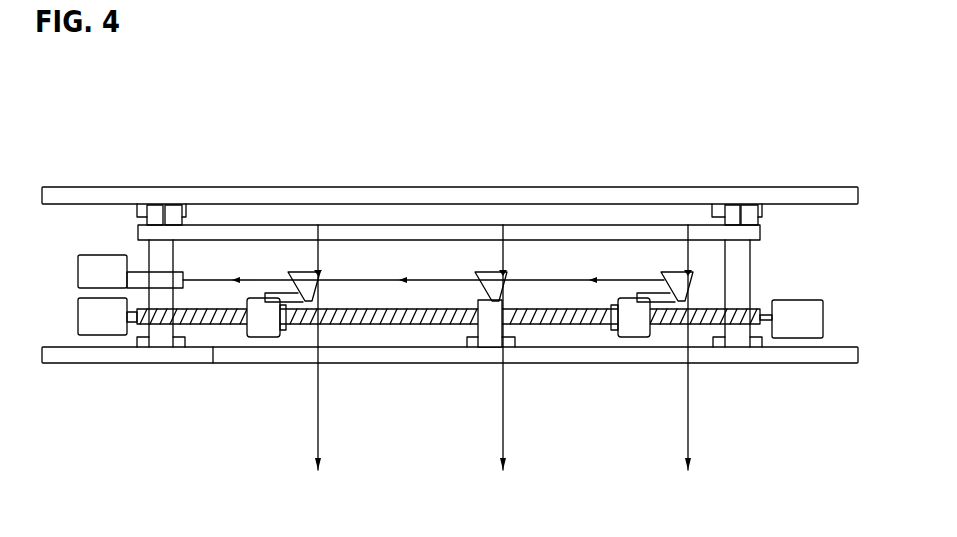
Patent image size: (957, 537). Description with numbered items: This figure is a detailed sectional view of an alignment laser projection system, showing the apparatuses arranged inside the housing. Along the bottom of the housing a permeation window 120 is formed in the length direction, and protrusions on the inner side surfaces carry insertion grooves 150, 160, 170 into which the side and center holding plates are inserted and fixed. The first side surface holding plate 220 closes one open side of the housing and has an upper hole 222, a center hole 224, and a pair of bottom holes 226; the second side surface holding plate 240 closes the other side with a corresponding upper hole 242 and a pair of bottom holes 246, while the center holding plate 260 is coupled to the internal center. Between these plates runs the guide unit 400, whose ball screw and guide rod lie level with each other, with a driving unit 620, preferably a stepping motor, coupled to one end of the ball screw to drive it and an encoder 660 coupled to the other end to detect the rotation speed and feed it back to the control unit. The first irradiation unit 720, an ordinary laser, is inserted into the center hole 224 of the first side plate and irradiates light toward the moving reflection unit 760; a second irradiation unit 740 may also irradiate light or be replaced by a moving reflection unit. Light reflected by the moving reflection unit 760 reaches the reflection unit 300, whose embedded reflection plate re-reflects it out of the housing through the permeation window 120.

The permeation window 120 is at (272, 357).
The insertion groove 150 is at (177, 207).
The insertion groove 160 is at (723, 217).
The insertion groove 170 is at (475, 348).
The first side surface holding plate 220 is at (158, 340).
The upper hole 222 is at (163, 210).
The center hole 224 is at (157, 270).
The bottom holes 226 is at (147, 322).
The second side surface holding plate 240 is at (735, 345).
The upper hole 242 is at (740, 220).
The bottom holes 246 is at (738, 340).
The center holding plate 260 is at (495, 340).
The reflection unit 300 is at (362, 232).
The guide unit 400 is at (190, 318).
The driving unit 620 is at (93, 330).
The encoder 660 is at (790, 325).
The first irradiation unit 720 is at (90, 267).
The second irradiation unit 740 is at (493, 268).
The moving reflection unit 760 is at (680, 268).